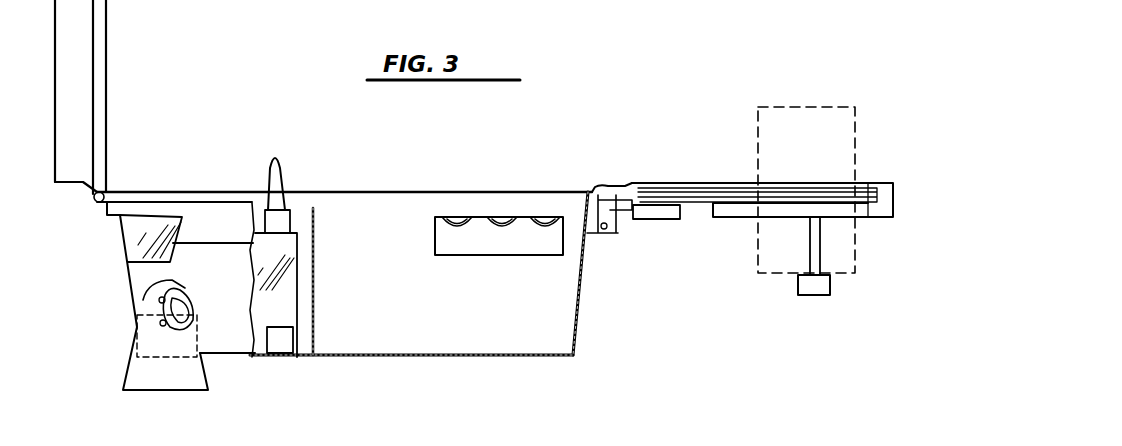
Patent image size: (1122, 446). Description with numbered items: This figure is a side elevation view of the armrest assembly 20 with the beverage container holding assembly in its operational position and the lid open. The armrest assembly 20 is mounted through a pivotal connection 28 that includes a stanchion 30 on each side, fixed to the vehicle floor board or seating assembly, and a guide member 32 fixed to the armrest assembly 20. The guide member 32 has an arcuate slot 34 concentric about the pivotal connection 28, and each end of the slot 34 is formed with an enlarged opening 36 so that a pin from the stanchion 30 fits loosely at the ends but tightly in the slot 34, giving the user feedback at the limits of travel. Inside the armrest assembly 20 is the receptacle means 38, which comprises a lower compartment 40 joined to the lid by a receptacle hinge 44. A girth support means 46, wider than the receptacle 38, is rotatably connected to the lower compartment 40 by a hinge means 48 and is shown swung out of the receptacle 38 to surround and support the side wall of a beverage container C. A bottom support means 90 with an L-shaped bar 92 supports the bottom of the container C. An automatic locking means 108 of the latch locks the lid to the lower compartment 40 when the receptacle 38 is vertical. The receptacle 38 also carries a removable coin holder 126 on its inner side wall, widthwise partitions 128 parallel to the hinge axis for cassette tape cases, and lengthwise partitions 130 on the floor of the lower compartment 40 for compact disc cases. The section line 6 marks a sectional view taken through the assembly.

The armrest assembly 20 is at (373, 257).
The pivotal connection 28 is at (157, 304).
The stanchion 30 is at (125, 373).
The guide member 32 is at (183, 295).
The arcuate slot 34 is at (192, 317).
The enlarged opening 36 is at (175, 292).
The receptacle means 38 is at (430, 186).
The lower compartment 40 is at (583, 287).
The receptacle hinge 44 is at (93, 202).
The girth support means 46 is at (735, 175).
The hinge means 48 is at (593, 188).
The section line 6- 6 is at (572, 215).
The bottom support means 90 is at (800, 303).
The L-shaped bar 92 is at (817, 250).
The automatic locking means 108 is at (613, 237).
The removable coin holder 126 is at (473, 240).
The widthwise partition 128 is at (275, 238).
The lengthwise partition 130 is at (283, 330).
The beverage container C is at (802, 103).